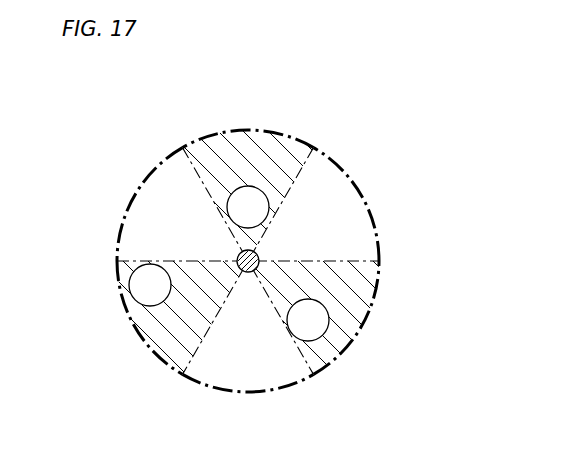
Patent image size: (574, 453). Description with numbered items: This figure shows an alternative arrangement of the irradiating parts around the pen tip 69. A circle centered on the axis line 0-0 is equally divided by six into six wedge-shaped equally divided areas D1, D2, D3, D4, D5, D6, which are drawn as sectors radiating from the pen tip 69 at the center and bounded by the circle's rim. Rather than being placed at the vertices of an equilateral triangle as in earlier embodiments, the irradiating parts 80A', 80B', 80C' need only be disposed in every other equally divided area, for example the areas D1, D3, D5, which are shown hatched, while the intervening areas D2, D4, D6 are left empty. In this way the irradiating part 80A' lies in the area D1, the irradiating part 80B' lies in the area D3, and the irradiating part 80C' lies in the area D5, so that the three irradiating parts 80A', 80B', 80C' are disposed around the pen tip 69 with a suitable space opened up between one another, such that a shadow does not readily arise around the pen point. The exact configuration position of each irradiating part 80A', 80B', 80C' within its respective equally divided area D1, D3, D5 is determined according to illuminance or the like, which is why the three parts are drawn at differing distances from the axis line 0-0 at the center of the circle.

The axis line 0-0 is at (258, 257).
The pen tip 69 is at (259, 262).
The irradiating part 80A' is at (244, 162).
The irradiating part 80B' is at (363, 320).
The irradiating part 80C' is at (104, 287).
The equally divided area D1 is at (293, 147).
The equally divided area D2 is at (323, 209).
The equally divided area D3 is at (330, 361).
The equally divided area D4 is at (270, 373).
The equally divided area D5 is at (158, 334).
The equally divided area D6 is at (158, 211).